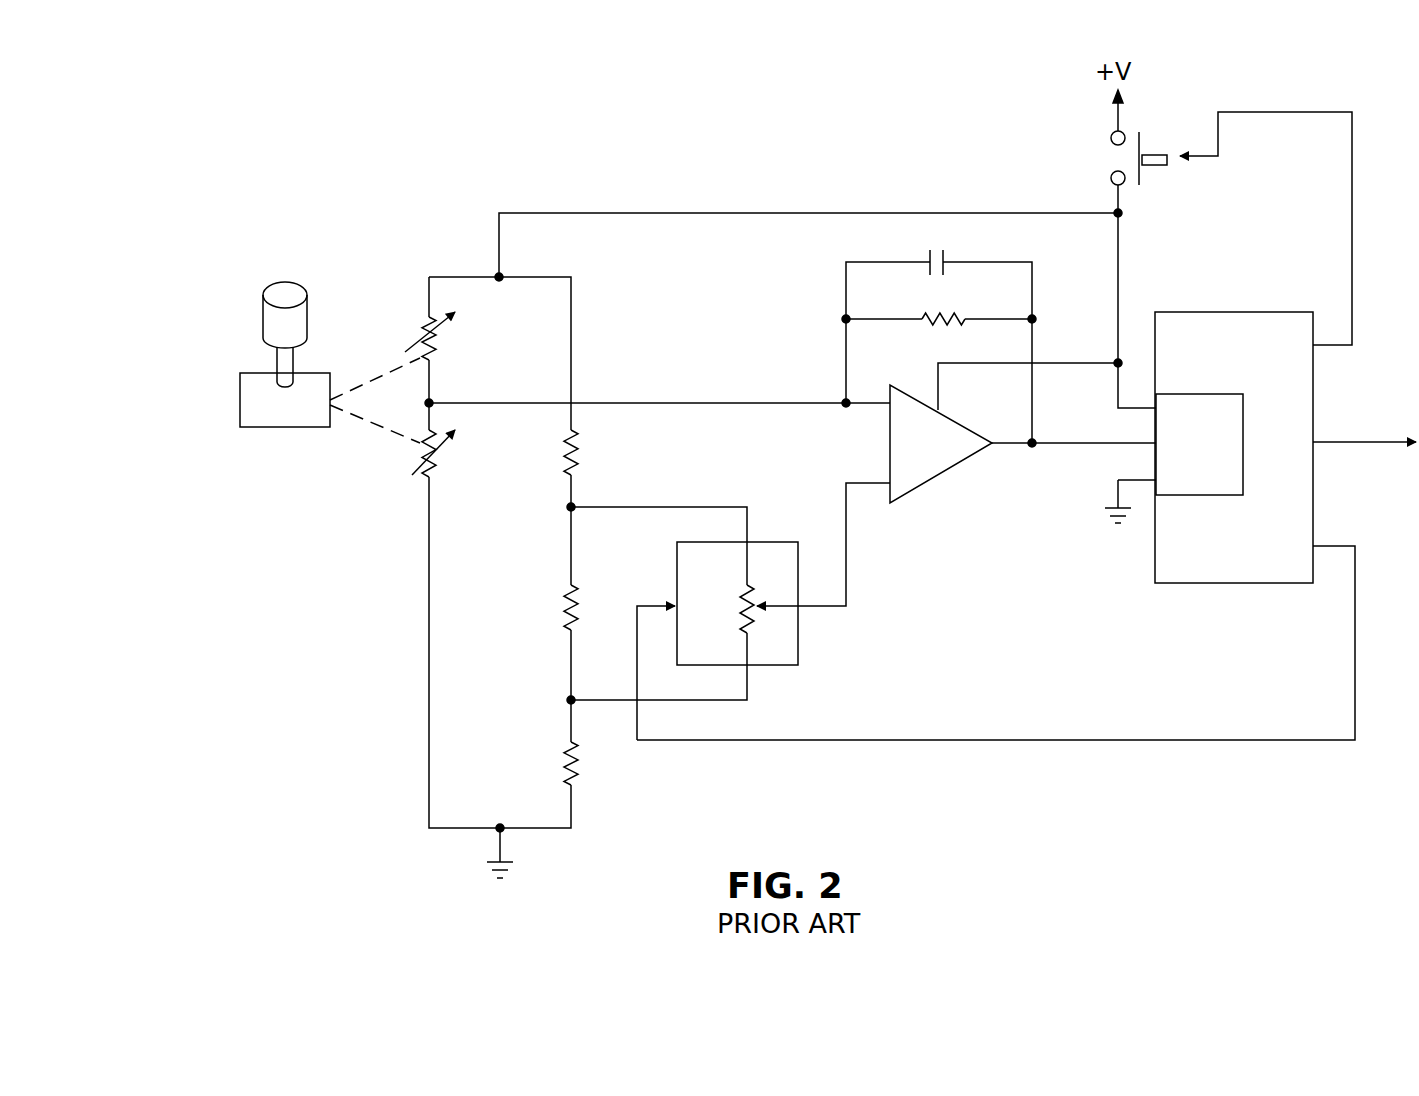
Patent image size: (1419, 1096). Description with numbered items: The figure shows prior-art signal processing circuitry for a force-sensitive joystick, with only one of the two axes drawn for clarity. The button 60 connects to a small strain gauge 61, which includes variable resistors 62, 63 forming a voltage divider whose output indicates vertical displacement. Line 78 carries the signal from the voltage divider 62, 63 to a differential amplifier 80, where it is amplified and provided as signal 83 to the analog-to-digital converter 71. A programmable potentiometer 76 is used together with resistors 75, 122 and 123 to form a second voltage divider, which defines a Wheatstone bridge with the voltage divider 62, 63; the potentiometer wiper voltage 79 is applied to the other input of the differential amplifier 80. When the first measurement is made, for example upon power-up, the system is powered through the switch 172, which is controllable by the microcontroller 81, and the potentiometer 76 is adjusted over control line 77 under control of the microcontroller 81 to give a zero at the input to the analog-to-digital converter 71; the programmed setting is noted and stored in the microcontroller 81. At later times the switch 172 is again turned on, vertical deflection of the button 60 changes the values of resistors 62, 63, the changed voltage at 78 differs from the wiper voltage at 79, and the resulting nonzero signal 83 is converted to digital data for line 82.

The button 60 is at (265, 290).
The strain gauge 61 is at (240, 410).
The variable resistor 62 is at (425, 325).
The variable resistor 63 is at (440, 470).
The resistor 122 is at (580, 447).
The resistor 75 is at (565, 605).
The resistor 123 is at (566, 760).
The programmable potentiometer 76 is at (748, 605).
The control line 77 is at (1000, 740).
The signal line 78 is at (735, 400).
The potentiometer wiper voltage 79 is at (846, 503).
The differential amplifier 80 is at (930, 483).
The amplifier output signal 83 is at (1078, 447).
The microcontroller 81 is at (1243, 583).
The analog-to-digital converter 71 is at (1200, 393).
The data line 82 is at (1357, 443).
The switch 172 is at (1152, 165).